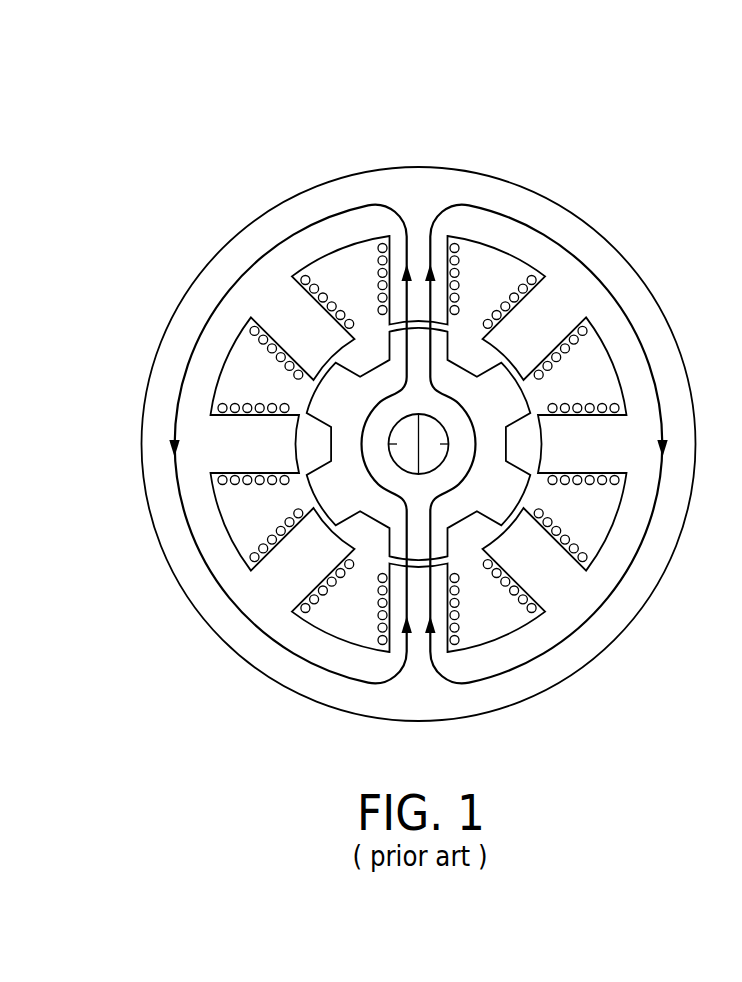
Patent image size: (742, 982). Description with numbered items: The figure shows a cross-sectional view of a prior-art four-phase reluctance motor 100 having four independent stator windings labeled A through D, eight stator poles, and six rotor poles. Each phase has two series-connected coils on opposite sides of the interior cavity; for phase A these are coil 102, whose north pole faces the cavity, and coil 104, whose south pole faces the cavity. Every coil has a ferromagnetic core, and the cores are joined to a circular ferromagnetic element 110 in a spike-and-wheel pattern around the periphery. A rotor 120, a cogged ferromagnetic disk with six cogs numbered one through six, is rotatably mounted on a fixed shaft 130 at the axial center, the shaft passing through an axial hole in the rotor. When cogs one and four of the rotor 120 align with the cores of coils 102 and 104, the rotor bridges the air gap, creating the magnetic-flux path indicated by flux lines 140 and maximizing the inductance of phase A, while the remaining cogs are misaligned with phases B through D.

The reluctance motor 100 is at (152, 86).
The coil 102 is at (459, 628).
The coil 104 is at (459, 297).
The circular ferromagnetic element 110 is at (508, 707).
The rotor 120 is at (371, 536).
The fixed shaft 130 is at (398, 456).
The flux lines 140 is at (306, 227).